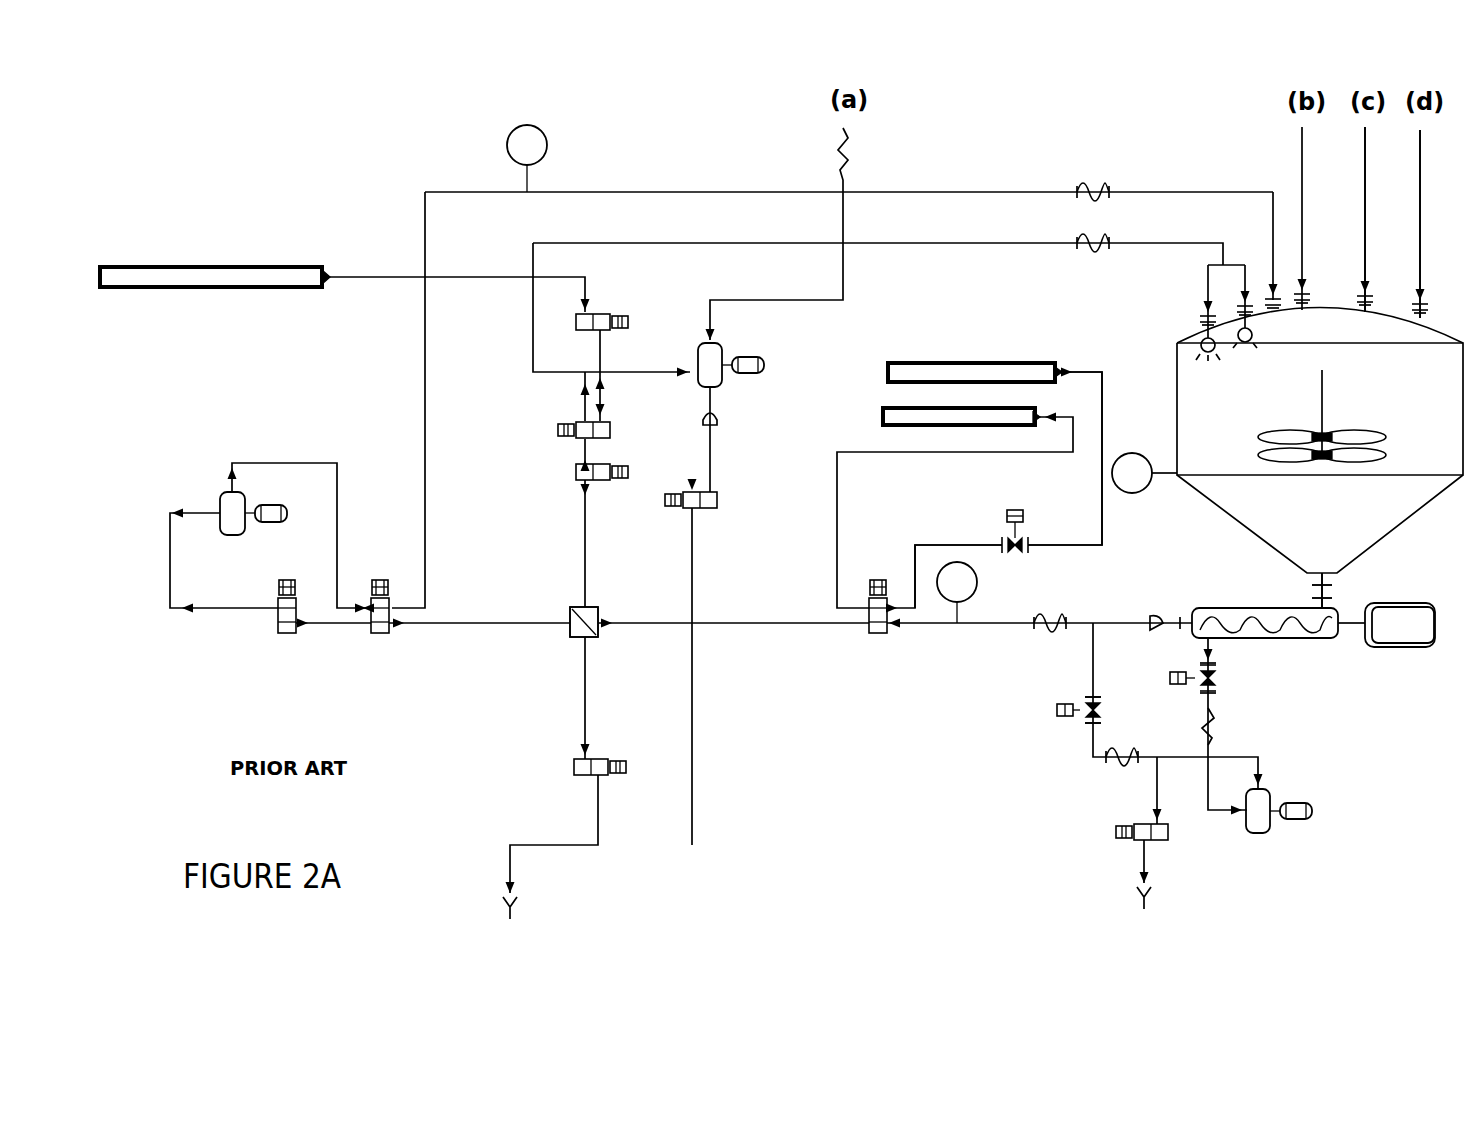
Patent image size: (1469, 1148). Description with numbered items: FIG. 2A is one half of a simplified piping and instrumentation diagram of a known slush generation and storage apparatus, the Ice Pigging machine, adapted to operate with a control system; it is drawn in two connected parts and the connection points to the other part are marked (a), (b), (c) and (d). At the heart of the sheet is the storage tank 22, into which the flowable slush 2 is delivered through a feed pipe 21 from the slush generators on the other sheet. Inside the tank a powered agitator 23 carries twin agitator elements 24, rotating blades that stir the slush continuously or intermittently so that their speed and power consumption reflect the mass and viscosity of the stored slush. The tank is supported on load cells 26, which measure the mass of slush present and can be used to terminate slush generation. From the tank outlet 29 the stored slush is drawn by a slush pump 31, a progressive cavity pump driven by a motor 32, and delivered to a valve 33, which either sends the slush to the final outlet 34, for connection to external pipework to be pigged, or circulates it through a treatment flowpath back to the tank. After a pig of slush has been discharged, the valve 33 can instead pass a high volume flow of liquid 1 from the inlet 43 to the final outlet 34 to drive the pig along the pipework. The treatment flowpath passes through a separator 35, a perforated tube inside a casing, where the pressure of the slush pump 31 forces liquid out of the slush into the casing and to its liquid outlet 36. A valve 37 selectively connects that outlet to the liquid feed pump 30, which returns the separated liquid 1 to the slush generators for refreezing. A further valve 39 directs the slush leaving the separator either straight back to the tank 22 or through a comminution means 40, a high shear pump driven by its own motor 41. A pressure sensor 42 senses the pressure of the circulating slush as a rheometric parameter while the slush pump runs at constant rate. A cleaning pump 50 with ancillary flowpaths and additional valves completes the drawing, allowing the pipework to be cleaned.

The liquid 1 is at (368, 284).
The flowable slush 2 is at (1002, 453).
The feed pipe 21 is at (1357, 164).
The storage tank 22 is at (1240, 521).
The powered agitator 23 is at (1370, 395).
The agitator elements 24 is at (1386, 435).
The load cells 26 is at (1132, 453).
The outlet 29 is at (1332, 580).
The liquid feed pump 30 is at (722, 350).
The slush pump 31 is at (1326, 652).
The motor 32 is at (1402, 646).
The valve 33 is at (878, 635).
The final outlet 34 is at (882, 416).
The separator 35 is at (566, 640).
The liquid outlet 36 is at (590, 600).
The valve 37 is at (575, 475).
The valve 39 is at (380, 635).
The comminution means 40 is at (236, 538).
The motor 41 is at (274, 504).
The pressure sensor 42 is at (549, 143).
The inlet 43 is at (890, 364).
The cleaning pump 50 is at (1270, 793).